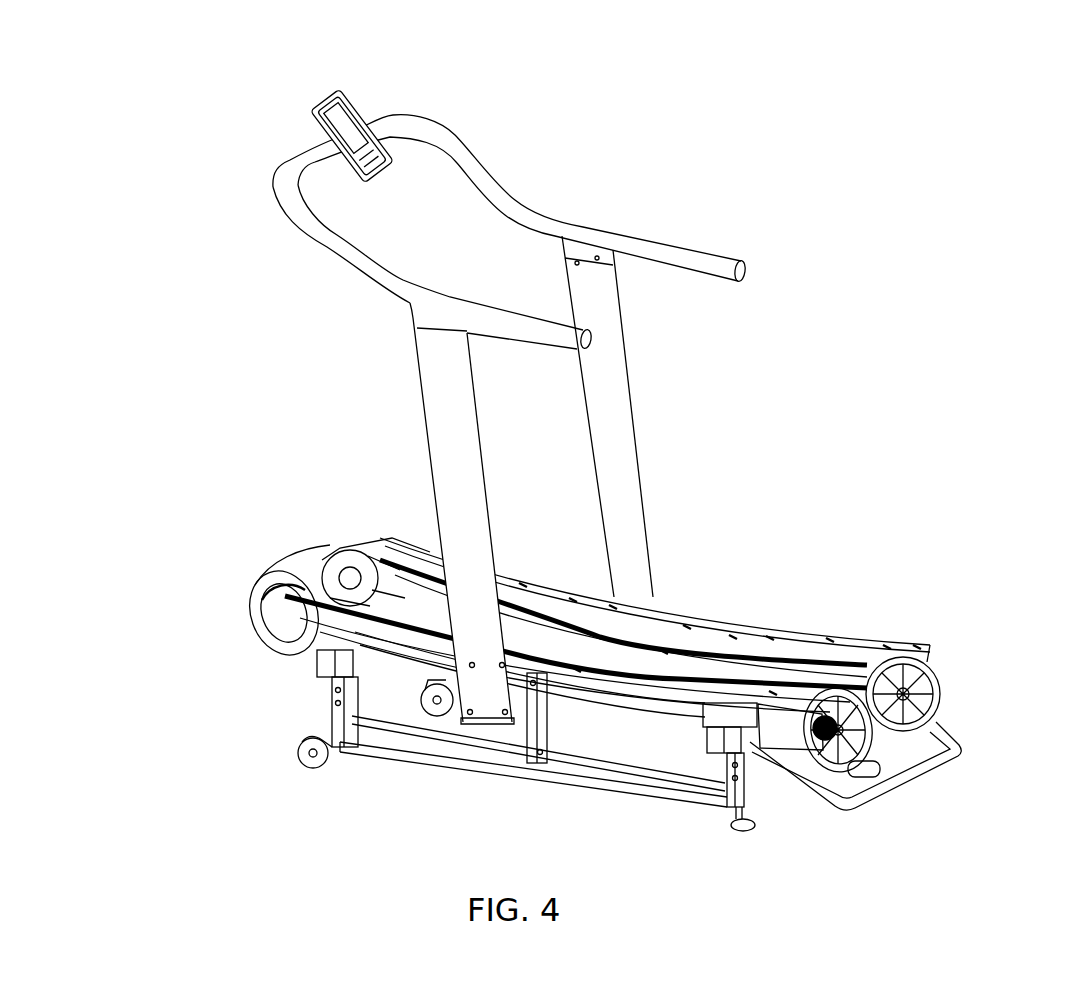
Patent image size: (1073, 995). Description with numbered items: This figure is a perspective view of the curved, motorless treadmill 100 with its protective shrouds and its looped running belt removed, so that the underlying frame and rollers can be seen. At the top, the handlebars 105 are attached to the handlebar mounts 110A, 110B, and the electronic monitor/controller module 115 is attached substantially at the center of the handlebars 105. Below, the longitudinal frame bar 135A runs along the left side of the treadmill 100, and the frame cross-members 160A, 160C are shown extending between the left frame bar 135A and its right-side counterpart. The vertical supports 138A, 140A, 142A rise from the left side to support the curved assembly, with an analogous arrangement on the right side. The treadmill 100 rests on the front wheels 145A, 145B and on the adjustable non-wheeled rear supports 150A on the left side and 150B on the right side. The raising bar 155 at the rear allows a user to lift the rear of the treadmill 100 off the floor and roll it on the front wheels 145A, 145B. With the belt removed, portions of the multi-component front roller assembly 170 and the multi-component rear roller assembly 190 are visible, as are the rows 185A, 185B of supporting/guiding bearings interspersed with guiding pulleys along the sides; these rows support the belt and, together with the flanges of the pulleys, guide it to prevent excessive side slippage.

The treadmill 100 is at (621, 433).
The handlebars 105 is at (500, 195).
The handlebar mount 110A is at (447, 393).
The handlebar mount 110B is at (618, 390).
The electronic monitor/controller module 115 is at (343, 102).
The longitudinal frame bar 135A is at (462, 757).
The vertical support 138A is at (330, 699).
The vertical support 140A is at (538, 731).
The vertical support 142A is at (747, 797).
The front wheel 145A is at (298, 748).
The front wheel 145B is at (419, 698).
The adjustable non-wheeled support 150A is at (731, 822).
The adjustable non-wheeled support 150B is at (880, 765).
The raising bar 155 is at (967, 750).
The frame cross-member 160A is at (315, 664).
The frame cross-member 160C is at (708, 742).
The front roller assembly 170 is at (348, 575).
The row of supporting/guiding bearings 185A is at (665, 685).
The row of supporting/guiding bearings 185B is at (646, 630).
The rear roller assembly 190 is at (900, 703).